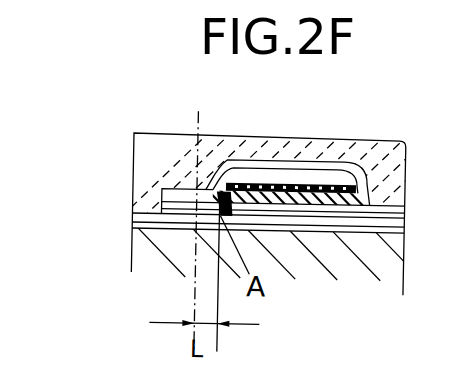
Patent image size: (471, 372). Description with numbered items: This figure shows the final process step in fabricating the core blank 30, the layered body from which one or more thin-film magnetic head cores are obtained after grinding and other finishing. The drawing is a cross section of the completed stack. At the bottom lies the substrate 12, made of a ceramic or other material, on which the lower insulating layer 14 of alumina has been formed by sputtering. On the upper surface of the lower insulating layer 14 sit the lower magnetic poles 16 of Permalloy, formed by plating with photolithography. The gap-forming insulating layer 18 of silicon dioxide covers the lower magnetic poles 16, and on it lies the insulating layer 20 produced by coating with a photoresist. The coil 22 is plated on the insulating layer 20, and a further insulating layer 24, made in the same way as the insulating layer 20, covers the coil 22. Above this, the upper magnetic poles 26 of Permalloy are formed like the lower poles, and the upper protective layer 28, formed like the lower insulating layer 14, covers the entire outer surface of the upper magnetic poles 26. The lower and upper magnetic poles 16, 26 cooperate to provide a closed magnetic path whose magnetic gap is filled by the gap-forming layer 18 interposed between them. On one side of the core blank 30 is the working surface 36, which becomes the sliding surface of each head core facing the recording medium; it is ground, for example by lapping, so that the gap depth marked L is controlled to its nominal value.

The substrate 12 is at (142, 249).
The lower insulating layer 14 is at (138, 220).
The lower magnetic poles 16 is at (382, 228).
The gap-forming insulating layer 18 is at (170, 188).
The insulating layer 20 is at (364, 197).
The coil 22 is at (252, 184).
The insulating layer 24 is at (285, 180).
The upper magnetic poles 26 is at (305, 158).
The upper protective layer 28 is at (370, 136).
The core blank 30 is at (112, 157).
The working surface 36 is at (133, 204).